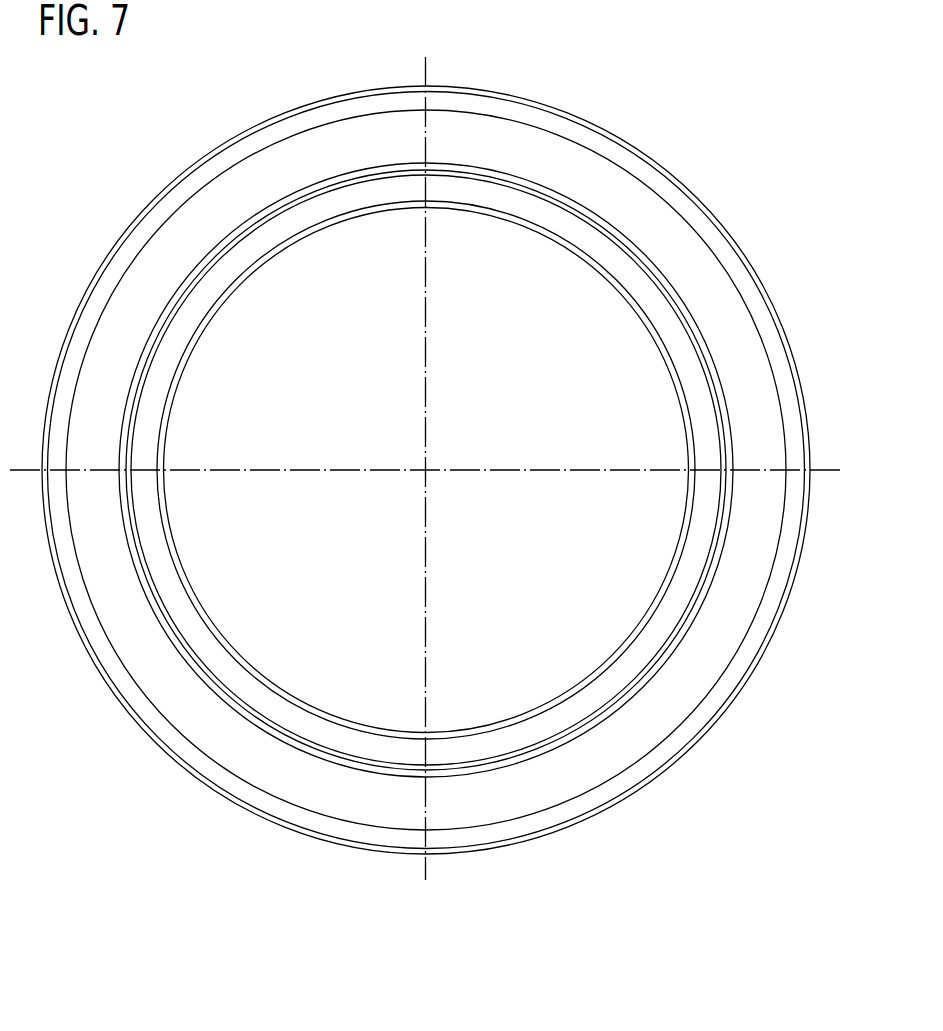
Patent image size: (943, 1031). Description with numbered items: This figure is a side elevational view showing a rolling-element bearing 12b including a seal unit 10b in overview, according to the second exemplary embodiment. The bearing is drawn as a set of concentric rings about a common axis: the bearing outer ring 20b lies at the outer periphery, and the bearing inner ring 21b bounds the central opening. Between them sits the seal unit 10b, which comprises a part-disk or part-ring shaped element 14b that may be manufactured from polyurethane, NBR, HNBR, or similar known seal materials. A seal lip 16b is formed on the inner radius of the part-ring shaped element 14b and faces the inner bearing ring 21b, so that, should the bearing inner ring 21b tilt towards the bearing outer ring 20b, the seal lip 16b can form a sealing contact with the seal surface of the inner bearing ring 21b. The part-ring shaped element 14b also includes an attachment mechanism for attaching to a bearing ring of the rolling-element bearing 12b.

The seal unit 10b is at (180, 220).
The rolling-element bearing 12b is at (713, 102).
The part-ring shaped element 14b is at (320, 138).
The seal lip 16b is at (690, 620).
The bearing outer ring 20b is at (735, 230).
The bearing inner ring 21b is at (598, 273).